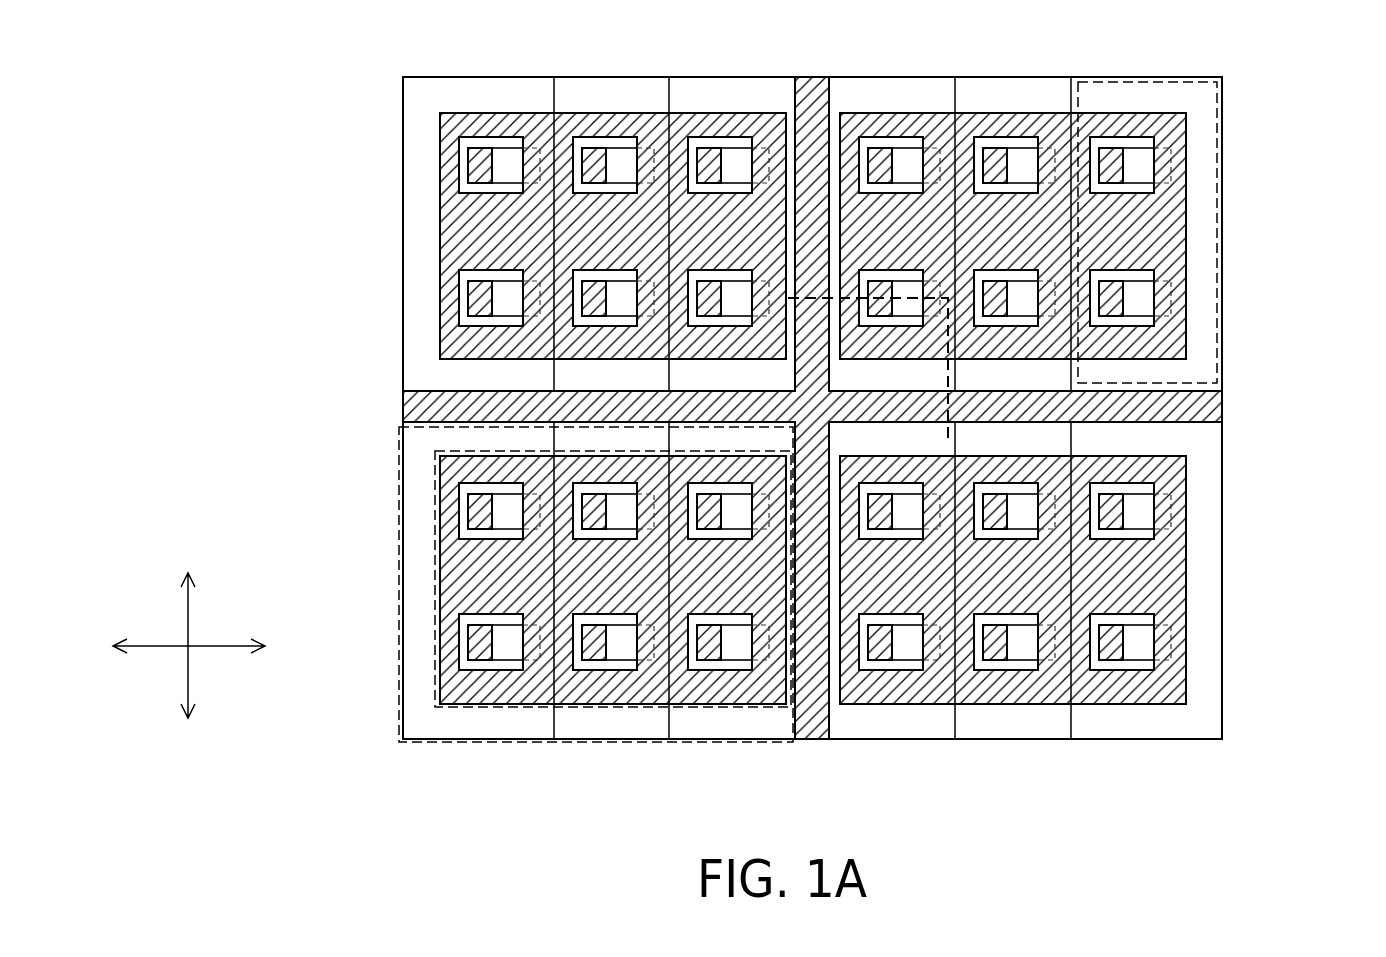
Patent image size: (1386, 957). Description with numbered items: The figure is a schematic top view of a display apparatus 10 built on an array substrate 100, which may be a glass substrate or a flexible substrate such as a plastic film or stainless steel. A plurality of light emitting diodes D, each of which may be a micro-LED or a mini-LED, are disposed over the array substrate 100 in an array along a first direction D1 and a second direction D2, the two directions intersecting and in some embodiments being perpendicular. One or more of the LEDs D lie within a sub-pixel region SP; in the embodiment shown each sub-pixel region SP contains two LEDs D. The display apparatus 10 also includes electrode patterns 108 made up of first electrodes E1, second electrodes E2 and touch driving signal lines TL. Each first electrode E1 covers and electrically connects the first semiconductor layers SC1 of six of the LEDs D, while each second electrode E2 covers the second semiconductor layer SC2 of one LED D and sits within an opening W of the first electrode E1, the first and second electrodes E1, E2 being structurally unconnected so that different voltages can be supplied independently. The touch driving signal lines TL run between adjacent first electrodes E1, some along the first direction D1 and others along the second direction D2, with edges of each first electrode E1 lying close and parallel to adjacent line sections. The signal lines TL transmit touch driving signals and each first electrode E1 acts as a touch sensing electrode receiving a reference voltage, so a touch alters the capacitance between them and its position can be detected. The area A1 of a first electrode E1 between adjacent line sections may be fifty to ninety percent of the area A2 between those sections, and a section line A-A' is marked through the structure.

The display apparatus 10 is at (1355, 787).
The array substrate 100 is at (1222, 462).
The electrode patterns 108 is at (728, 364).
The first electrode E1 is at (455, 230).
The second electrode E2 is at (477, 160).
The opening W is at (606, 137).
The light emitting diode D is at (464, 145).
The first semiconductor layer SC1 is at (540, 140).
The second semiconductor layer SC2 is at (503, 157).
The touch driving signal line TL is at (403, 410).
The sub-pixel region SP is at (1217, 112).
The area of one of the first electrodes A1 is at (489, 712).
The area between adjacent line sections of the touch driving signal lines A2 is at (603, 748).
The section line end A is at (867, 367).
The section line end A' is at (938, 441).
The first direction D1 is at (208, 649).
The second direction D2 is at (187, 626).